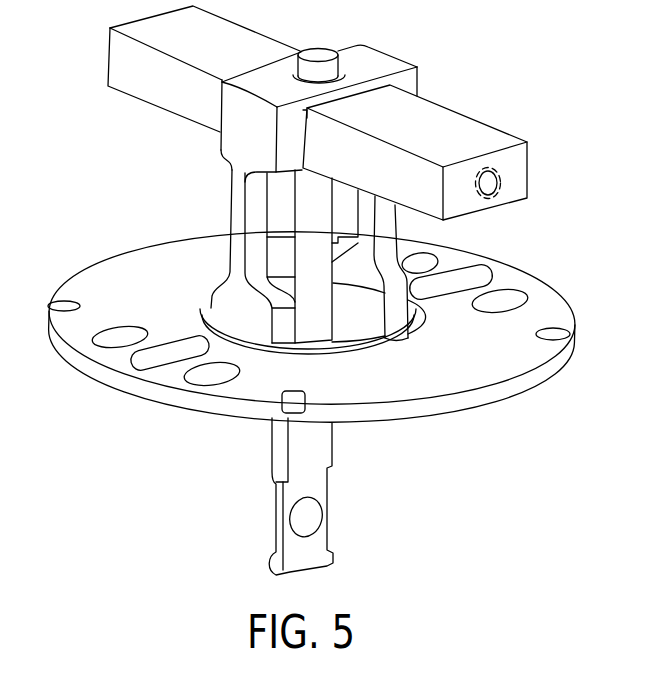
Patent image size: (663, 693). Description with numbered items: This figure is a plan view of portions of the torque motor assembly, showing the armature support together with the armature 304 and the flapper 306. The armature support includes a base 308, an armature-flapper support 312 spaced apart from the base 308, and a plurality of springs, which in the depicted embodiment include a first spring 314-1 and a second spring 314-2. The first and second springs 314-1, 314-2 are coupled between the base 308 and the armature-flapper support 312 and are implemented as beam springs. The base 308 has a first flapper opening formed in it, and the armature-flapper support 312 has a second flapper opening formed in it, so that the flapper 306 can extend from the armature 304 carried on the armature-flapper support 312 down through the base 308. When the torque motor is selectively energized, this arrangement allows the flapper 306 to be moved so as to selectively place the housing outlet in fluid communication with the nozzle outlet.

The armature 304 is at (110, 58).
The armature-flapper support 312 is at (381, 57).
The first spring 314-1 is at (391, 222).
The second spring 314-2 is at (237, 212).
The base 308 is at (509, 278).
The flapper 306 is at (328, 457).